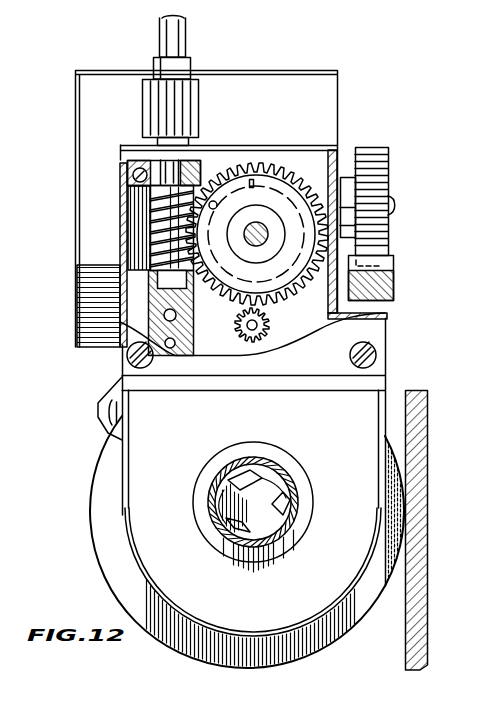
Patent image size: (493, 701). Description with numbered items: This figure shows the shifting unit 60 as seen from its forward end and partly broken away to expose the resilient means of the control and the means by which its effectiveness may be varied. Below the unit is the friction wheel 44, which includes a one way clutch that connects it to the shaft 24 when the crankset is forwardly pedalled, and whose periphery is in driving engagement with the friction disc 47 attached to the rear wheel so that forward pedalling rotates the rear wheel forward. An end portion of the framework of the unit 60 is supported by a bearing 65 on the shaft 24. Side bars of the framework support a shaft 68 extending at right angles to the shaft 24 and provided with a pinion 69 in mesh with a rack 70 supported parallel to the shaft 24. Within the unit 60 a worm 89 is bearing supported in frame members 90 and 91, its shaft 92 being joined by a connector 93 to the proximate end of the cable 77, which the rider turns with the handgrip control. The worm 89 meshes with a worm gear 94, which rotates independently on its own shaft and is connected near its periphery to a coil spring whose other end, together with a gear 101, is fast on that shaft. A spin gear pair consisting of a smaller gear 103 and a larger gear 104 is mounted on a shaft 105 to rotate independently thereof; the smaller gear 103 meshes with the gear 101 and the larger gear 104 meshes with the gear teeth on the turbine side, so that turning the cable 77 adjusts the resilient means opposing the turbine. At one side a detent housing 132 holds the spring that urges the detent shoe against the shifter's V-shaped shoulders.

The shifting unit 60 is at (271, 66).
The cable 77 is at (165, 36).
The connector 93 is at (197, 98).
The gear 101 is at (265, 160).
The worm gear 94 is at (290, 162).
The pinion 69 is at (373, 146).
The shaft 68 is at (395, 205).
The rack 70 is at (398, 276).
The frame member 90 is at (128, 174).
The shaft 92 is at (163, 200).
The worm 89 is at (150, 230).
The frame member 91 is at (100, 272).
The larger gear 104 is at (320, 333).
The smaller gear 103 is at (246, 335).
The shaft 105 is at (253, 331).
The detent housing 132 is at (100, 418).
The friction disc 47 is at (428, 438).
The bearing 65 is at (298, 470).
The shaft 24 is at (292, 522).
The friction wheel 44 is at (100, 570).